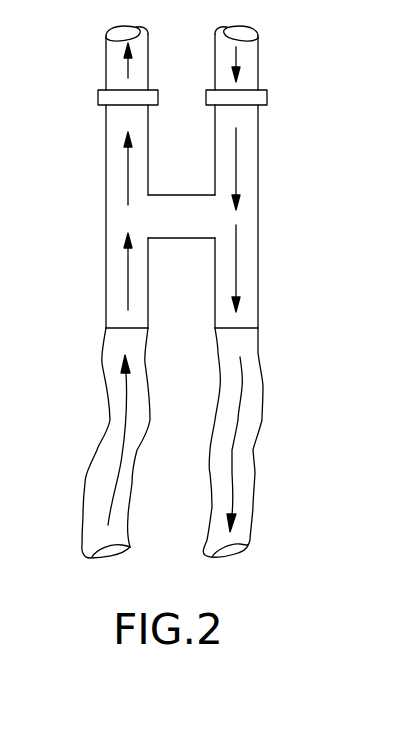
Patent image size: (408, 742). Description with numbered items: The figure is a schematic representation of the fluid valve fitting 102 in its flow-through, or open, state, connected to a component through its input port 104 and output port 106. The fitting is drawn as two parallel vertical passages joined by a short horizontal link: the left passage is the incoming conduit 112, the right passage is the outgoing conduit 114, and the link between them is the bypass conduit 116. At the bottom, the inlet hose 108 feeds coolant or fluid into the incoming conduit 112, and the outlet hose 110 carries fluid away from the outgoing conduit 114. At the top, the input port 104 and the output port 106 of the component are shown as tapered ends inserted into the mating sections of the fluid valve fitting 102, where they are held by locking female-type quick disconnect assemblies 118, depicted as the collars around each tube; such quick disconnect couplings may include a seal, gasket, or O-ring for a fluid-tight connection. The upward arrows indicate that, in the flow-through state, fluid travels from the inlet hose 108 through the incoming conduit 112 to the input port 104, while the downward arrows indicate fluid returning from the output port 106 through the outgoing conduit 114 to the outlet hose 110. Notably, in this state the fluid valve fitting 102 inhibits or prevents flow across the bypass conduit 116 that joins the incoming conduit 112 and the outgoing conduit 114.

The fluid valve fitting 102 is at (259, 156).
The input port 104 is at (107, 46).
The output port 106 is at (262, 48).
The inlet hose 108 is at (108, 418).
The outlet hose 110 is at (262, 418).
The incoming conduit 112 is at (117, 161).
The outgoing conduit 114 is at (248, 173).
The bypass conduit 116 is at (172, 225).
The locking female-type quick disconnect assemblies 118 is at (98, 98).